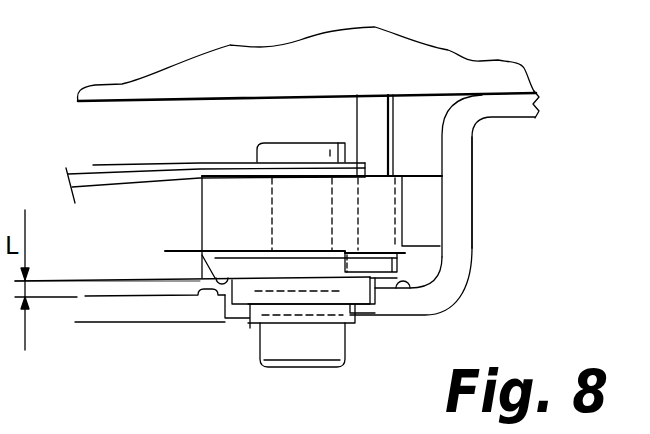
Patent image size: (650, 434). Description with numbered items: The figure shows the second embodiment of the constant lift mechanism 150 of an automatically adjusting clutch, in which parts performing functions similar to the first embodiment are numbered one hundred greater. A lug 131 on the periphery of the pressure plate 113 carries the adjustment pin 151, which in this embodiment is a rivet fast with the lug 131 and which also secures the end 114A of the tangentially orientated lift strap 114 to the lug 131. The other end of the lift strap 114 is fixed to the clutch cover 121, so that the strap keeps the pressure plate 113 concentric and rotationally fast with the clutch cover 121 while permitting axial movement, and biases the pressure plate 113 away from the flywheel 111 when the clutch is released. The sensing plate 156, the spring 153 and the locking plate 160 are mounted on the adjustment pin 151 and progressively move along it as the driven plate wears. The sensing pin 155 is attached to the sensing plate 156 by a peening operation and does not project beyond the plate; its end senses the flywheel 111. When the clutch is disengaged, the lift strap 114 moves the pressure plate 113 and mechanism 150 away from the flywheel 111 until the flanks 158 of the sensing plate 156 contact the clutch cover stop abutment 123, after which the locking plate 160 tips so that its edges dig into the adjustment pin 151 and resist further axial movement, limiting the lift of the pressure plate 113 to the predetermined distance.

The flywheel 111 is at (417, 67).
The pressure plate 113 is at (418, 196).
The lift strap 114 is at (66, 181).
The end of lift strap 114A is at (193, 176).
The clutch cover 121 is at (458, 155).
The clutch cover stop abutment 123 is at (203, 291).
The lug 131 is at (253, 226).
The constant lift mechanism 150 is at (468, 281).
The adjustment pin 151 is at (330, 334).
The spring 153 is at (360, 314).
The sensing pin 155 is at (368, 117).
The sensing plate 156 is at (403, 262).
The flanks of sensing plate 158 is at (201, 253).
The locking plate 160 is at (250, 325).